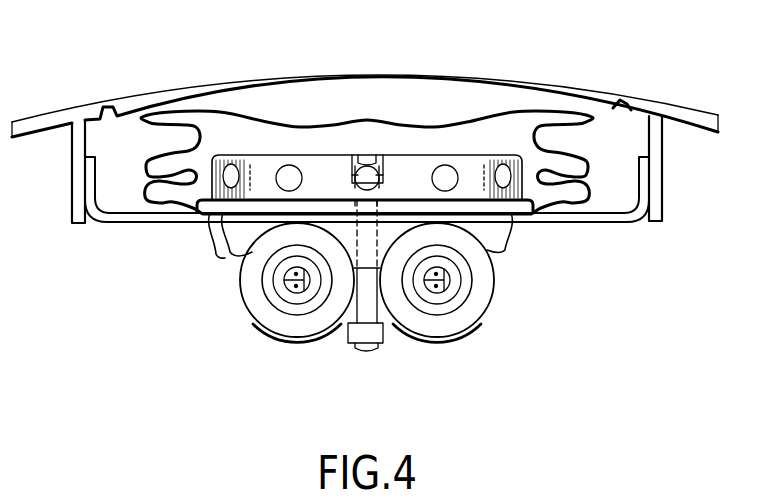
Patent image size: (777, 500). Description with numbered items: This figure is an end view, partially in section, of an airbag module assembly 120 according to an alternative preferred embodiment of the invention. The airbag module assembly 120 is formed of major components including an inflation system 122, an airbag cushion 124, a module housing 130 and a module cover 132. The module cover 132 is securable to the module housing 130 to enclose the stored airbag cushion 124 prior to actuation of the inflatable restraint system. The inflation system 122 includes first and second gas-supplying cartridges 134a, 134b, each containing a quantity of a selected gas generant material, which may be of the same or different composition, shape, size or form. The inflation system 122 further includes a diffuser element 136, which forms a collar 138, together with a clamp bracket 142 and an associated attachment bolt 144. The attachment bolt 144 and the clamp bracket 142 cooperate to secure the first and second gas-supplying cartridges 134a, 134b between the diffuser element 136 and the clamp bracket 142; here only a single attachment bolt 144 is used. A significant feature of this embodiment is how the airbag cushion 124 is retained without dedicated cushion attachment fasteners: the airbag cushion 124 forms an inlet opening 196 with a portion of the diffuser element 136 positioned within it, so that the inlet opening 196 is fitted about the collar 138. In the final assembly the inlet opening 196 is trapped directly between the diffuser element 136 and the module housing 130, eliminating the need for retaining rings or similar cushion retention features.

The airbag module assembly 120 is at (674, 92).
The inflation system 122 is at (508, 344).
The airbag cushion 124 is at (262, 120).
The module housing 130 is at (100, 223).
The module cover 132 is at (80, 117).
The first gas-supplying cartridge 134a is at (252, 293).
The second gas-supplying cartridge 134b is at (452, 320).
The diffuser element 136 is at (413, 178).
The collar 138 is at (202, 203).
The clamp bracket 142 is at (268, 341).
The attachment bolt 144 is at (368, 354).
The inlet opening 196 is at (354, 251).